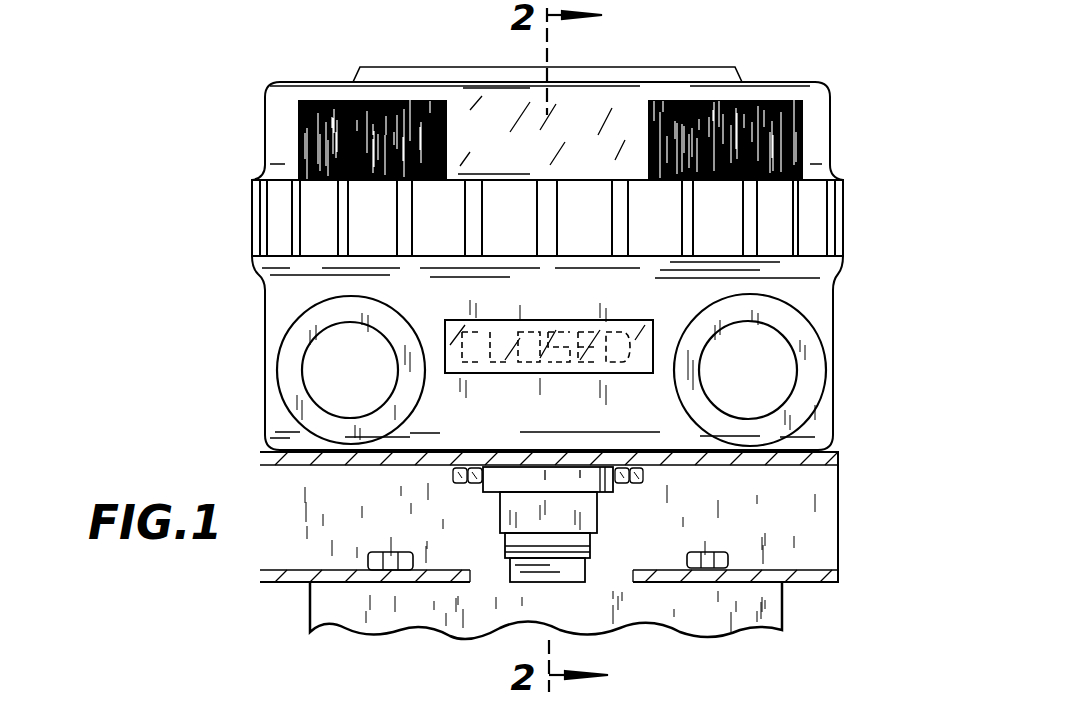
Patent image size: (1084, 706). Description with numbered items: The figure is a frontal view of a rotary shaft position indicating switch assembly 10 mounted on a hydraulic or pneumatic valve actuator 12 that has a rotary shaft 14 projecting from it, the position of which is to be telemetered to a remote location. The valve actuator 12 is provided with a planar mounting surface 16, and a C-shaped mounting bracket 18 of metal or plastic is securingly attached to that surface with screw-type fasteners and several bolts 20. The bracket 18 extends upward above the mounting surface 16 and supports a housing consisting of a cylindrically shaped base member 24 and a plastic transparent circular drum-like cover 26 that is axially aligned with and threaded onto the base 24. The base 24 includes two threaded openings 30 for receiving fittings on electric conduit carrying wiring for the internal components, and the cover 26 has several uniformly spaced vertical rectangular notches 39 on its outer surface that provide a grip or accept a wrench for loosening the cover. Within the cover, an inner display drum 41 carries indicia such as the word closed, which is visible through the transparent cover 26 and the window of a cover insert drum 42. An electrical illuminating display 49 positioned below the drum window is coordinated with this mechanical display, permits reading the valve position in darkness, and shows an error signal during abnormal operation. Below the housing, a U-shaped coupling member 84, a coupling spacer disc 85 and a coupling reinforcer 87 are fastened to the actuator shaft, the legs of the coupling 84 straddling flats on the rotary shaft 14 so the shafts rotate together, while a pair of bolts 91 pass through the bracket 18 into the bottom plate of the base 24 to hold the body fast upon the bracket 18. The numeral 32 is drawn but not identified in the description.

The rotary shaft position indicating switch assembly 10 is at (846, 101).
The valve actuator 12 is at (310, 608).
The rotary shaft 14 is at (570, 576).
The planar mounting surface 16 is at (810, 585).
The C-shaped mounting bracket 18 is at (828, 506).
The bolts 20 is at (388, 552).
The base member 24 is at (265, 302).
The transparent cover 26 is at (265, 113).
The threaded openings 30 is at (292, 366).
The ribbed band 32 is at (845, 219).
The vertical rectangular notches 39 is at (752, 203).
The inner display drum 41 is at (598, 96).
The cover insert drum 42 is at (720, 110).
The electrical illuminating display 49 is at (582, 318).
The U-shaped coupling member 84 is at (580, 546).
The coupling spacer disc 85 is at (497, 487).
The coupling reinforcer 87 is at (585, 514).
The bolts 91 is at (645, 478).